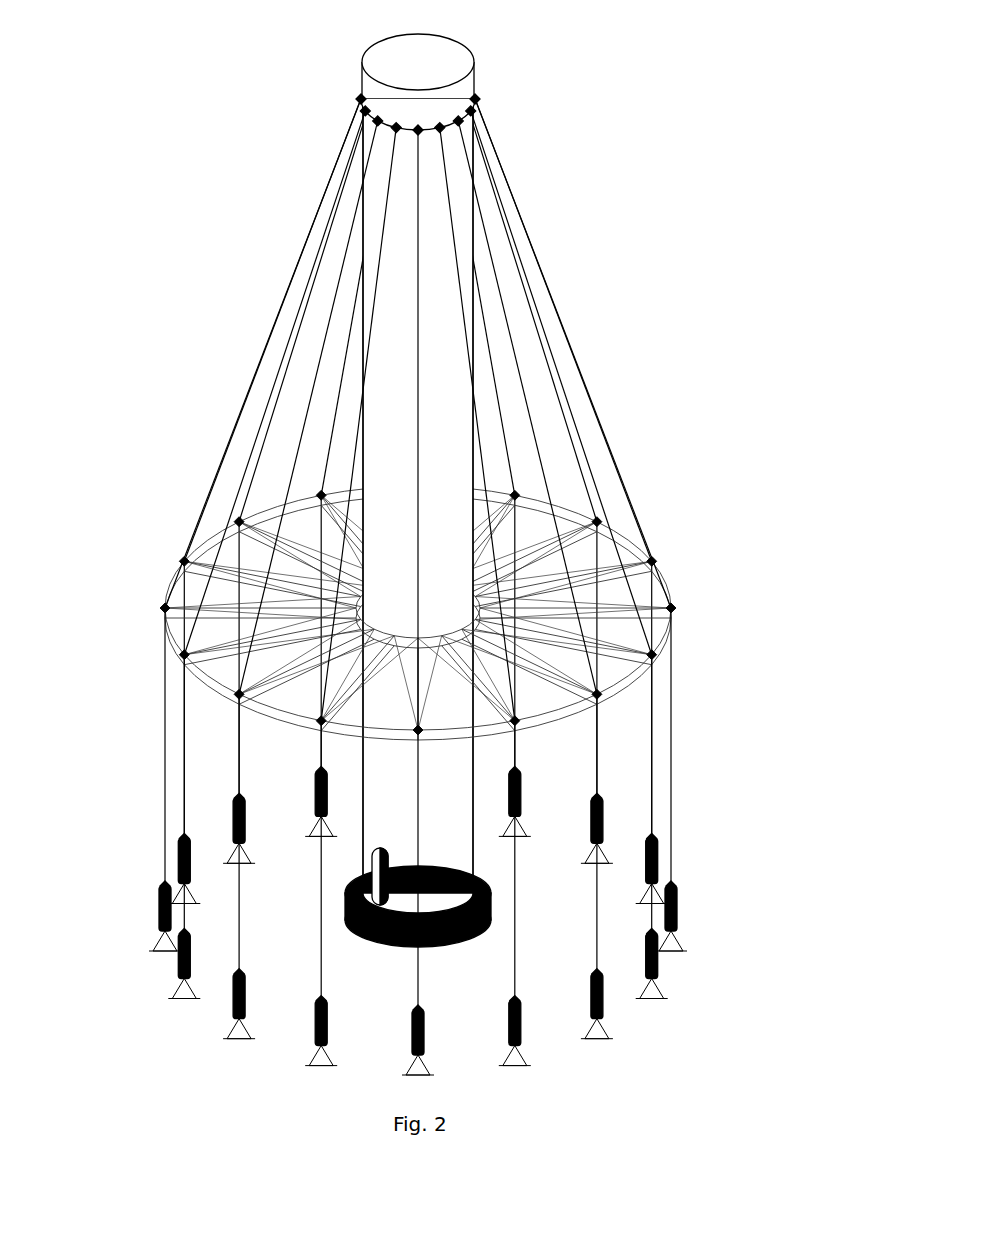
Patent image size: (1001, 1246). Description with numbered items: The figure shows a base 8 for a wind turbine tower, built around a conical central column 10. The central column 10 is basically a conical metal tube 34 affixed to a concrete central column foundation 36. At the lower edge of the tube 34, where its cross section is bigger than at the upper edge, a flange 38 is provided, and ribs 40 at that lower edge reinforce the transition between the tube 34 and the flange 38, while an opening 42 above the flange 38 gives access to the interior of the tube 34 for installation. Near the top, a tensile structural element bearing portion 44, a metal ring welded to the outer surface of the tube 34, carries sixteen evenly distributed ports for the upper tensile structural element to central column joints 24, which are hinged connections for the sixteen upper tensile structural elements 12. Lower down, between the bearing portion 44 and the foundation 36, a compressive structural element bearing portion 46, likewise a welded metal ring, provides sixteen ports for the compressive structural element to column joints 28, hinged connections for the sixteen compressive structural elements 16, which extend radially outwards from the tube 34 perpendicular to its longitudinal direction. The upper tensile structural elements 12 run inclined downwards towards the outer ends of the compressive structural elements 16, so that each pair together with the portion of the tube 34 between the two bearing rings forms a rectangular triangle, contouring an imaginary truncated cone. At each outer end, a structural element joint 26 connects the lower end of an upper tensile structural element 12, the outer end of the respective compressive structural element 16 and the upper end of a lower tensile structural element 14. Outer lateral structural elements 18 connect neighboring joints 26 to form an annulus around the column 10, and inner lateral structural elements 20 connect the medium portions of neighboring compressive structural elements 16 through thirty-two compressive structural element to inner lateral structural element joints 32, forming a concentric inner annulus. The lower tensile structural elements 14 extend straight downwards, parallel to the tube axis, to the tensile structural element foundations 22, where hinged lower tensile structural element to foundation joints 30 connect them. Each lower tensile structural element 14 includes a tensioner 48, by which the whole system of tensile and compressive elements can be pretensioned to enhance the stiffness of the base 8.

The base 8 is at (145, 119).
The conical central column 10 is at (432, 67).
The upper tensile structural elements 12 is at (510, 178).
The lower tensile structural elements 14 is at (673, 643).
The compressive structural elements 16 is at (660, 603).
The outer lateral structural elements 18 is at (630, 545).
The inner lateral structural elements 20 is at (550, 572).
The tensile structural element foundations 22 is at (678, 938).
The upper tensile structural element to central column joints 24 is at (478, 100).
The structural element joints 26 is at (613, 615).
The compressive structural element to column joints 28 is at (459, 635).
The lower tensile structural element to foundation joints 30 is at (657, 978).
The compressive structural element to inner lateral structural element joints 32 is at (600, 698).
The conical metal tube 34 is at (455, 797).
The concrete central column foundation 36 is at (483, 923).
The flange 38 is at (473, 887).
The ribs 40 is at (410, 913).
The opening 42 is at (360, 868).
The tensile structural element bearing portion 44 is at (373, 120).
The compressive structural element bearing portion 46 is at (377, 637).
The tensioner 48 is at (603, 1005).